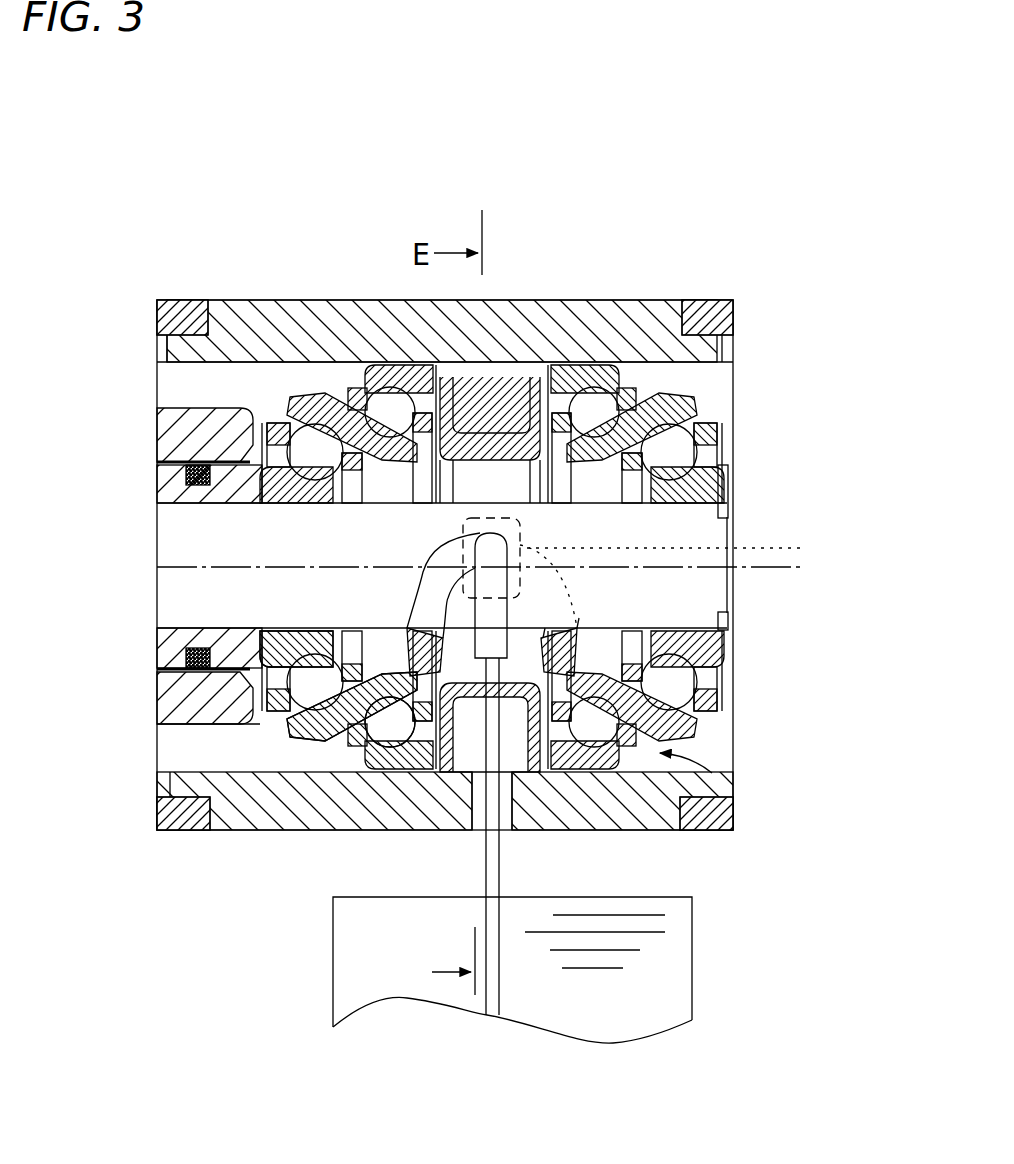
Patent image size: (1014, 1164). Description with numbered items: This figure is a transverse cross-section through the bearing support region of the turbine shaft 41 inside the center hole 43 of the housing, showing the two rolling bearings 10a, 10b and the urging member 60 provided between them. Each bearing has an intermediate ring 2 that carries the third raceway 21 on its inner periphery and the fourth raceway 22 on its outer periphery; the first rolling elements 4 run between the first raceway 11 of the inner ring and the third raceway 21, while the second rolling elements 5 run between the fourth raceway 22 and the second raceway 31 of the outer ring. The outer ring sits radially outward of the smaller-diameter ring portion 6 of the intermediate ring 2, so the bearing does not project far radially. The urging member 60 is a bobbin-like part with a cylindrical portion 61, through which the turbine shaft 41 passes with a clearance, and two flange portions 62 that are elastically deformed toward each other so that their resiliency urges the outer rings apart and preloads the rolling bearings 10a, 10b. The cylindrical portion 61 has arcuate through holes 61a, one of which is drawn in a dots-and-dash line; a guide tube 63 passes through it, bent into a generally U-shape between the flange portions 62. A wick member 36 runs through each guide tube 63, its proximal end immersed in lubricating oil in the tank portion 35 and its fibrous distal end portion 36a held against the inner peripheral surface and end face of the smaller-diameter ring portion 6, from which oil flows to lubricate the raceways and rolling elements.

The intermediate ring 2 is at (160, 829).
The first rolling elements 4 is at (265, 700).
The second rolling elements 5 is at (378, 716).
The smaller-diameter ring portion 6 is at (388, 678).
The rolling bearing 10a is at (283, 745).
The rolling bearing 10b is at (735, 800).
The first raceway 11 is at (258, 688).
The third raceway 21 is at (290, 738).
The fourth raceway 22 is at (335, 748).
The second raceway 31 is at (353, 745).
The tank portion 35 is at (643, 997).
The wick member 36 is at (492, 952).
The distal end portion 36a is at (405, 678).
The turbine shaft 41 is at (196, 551).
The center hole 43 is at (185, 388).
The urging member 60 is at (555, 715).
The cylindrical portion 61 is at (493, 438).
The through hole 61a is at (520, 530).
The flange portion 62 is at (468, 800).
The guide tube 63 is at (493, 612).